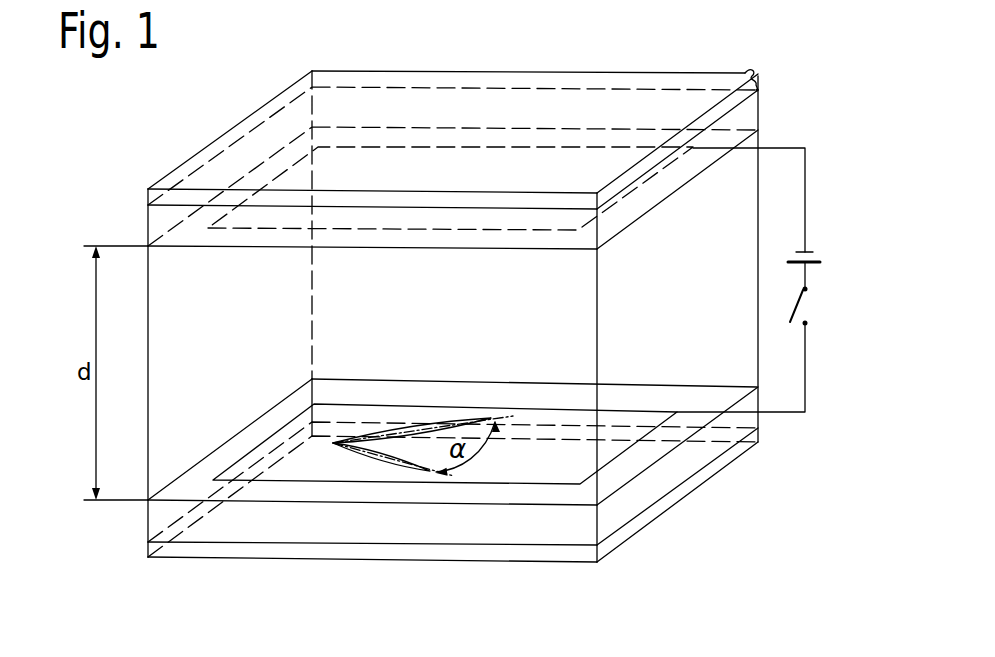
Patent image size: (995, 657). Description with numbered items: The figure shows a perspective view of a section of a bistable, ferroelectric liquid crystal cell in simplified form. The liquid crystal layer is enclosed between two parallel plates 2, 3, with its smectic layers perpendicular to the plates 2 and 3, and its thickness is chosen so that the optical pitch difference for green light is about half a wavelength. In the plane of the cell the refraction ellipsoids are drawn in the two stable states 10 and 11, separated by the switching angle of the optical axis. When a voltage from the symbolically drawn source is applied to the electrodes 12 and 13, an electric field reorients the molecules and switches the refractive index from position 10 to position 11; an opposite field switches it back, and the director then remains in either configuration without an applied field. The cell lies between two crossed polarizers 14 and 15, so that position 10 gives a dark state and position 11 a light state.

The plate 2 is at (750, 111).
The plate 3 is at (643, 498).
The stable state 10 is at (373, 462).
The stable state 11 is at (410, 422).
The electrode 12 is at (663, 166).
The electrode 13 is at (528, 507).
The polarizer 14 is at (758, 84).
The polarizer 15 is at (739, 452).